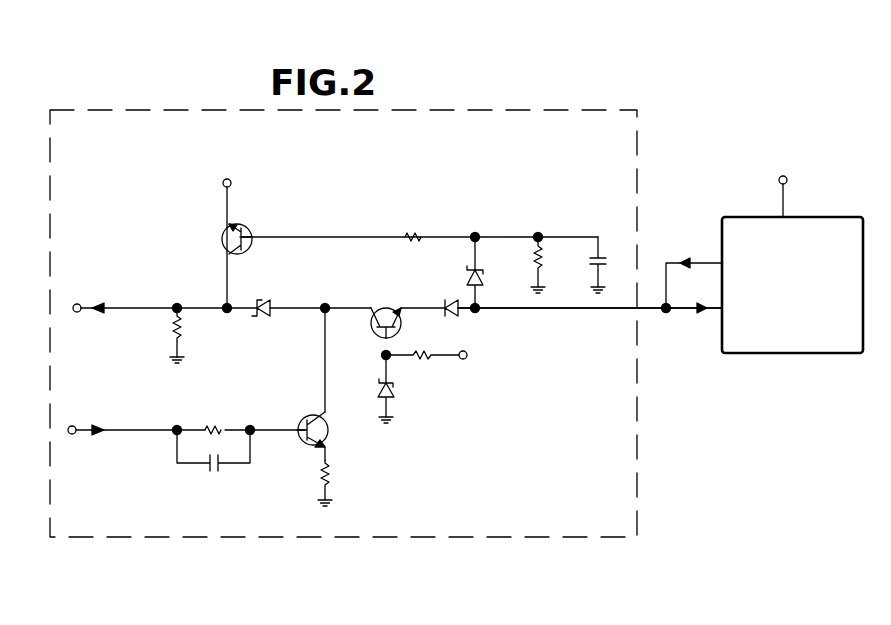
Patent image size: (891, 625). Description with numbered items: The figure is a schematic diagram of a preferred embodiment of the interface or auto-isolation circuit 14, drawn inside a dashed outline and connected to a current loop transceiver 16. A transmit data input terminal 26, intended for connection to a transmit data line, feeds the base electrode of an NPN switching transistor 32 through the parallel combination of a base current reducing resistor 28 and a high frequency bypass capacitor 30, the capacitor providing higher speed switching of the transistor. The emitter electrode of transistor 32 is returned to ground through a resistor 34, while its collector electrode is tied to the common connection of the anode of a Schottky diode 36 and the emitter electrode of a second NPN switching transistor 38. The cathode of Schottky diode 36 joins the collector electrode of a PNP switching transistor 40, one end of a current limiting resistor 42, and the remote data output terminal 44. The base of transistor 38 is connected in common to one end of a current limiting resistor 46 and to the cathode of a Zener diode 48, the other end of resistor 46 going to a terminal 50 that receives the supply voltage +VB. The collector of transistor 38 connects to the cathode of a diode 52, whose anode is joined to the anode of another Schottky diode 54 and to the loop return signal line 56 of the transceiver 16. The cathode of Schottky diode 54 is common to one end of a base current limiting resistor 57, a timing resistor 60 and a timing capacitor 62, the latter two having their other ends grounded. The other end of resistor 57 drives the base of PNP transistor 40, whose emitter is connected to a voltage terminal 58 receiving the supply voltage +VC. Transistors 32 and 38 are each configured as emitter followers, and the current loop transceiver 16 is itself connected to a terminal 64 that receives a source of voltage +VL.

The interface circuit 14 is at (527, 537).
The current loop transceiver 16 is at (775, 355).
The transmit data input terminal 26 is at (72, 426).
The base current reducing resistor 28 is at (213, 430).
The high frequency bypass capacitor 30 is at (218, 470).
The NPN switching transistor 32 is at (312, 415).
The resistor 34 is at (330, 478).
The Schottky diode 36 is at (262, 302).
The NPN switching transistor 38 is at (386, 308).
The PNP switching transistor 40 is at (248, 228).
The current limiting resistor 42 is at (180, 332).
The remote data output terminal 44 is at (77, 304).
The current limiting resistor 46 is at (423, 359).
The Zener diode 48 is at (383, 386).
The terminal 50 is at (464, 351).
The diode 52 is at (447, 314).
The Schottky diode 54 is at (480, 282).
The loop return signal line 56 is at (612, 313).
The base current limiting resistor 57 is at (415, 236).
The voltage terminal 58 is at (232, 182).
The timing resistor 60 is at (541, 263).
The timing capacitor 62 is at (600, 258).
The terminal 64 is at (788, 182).